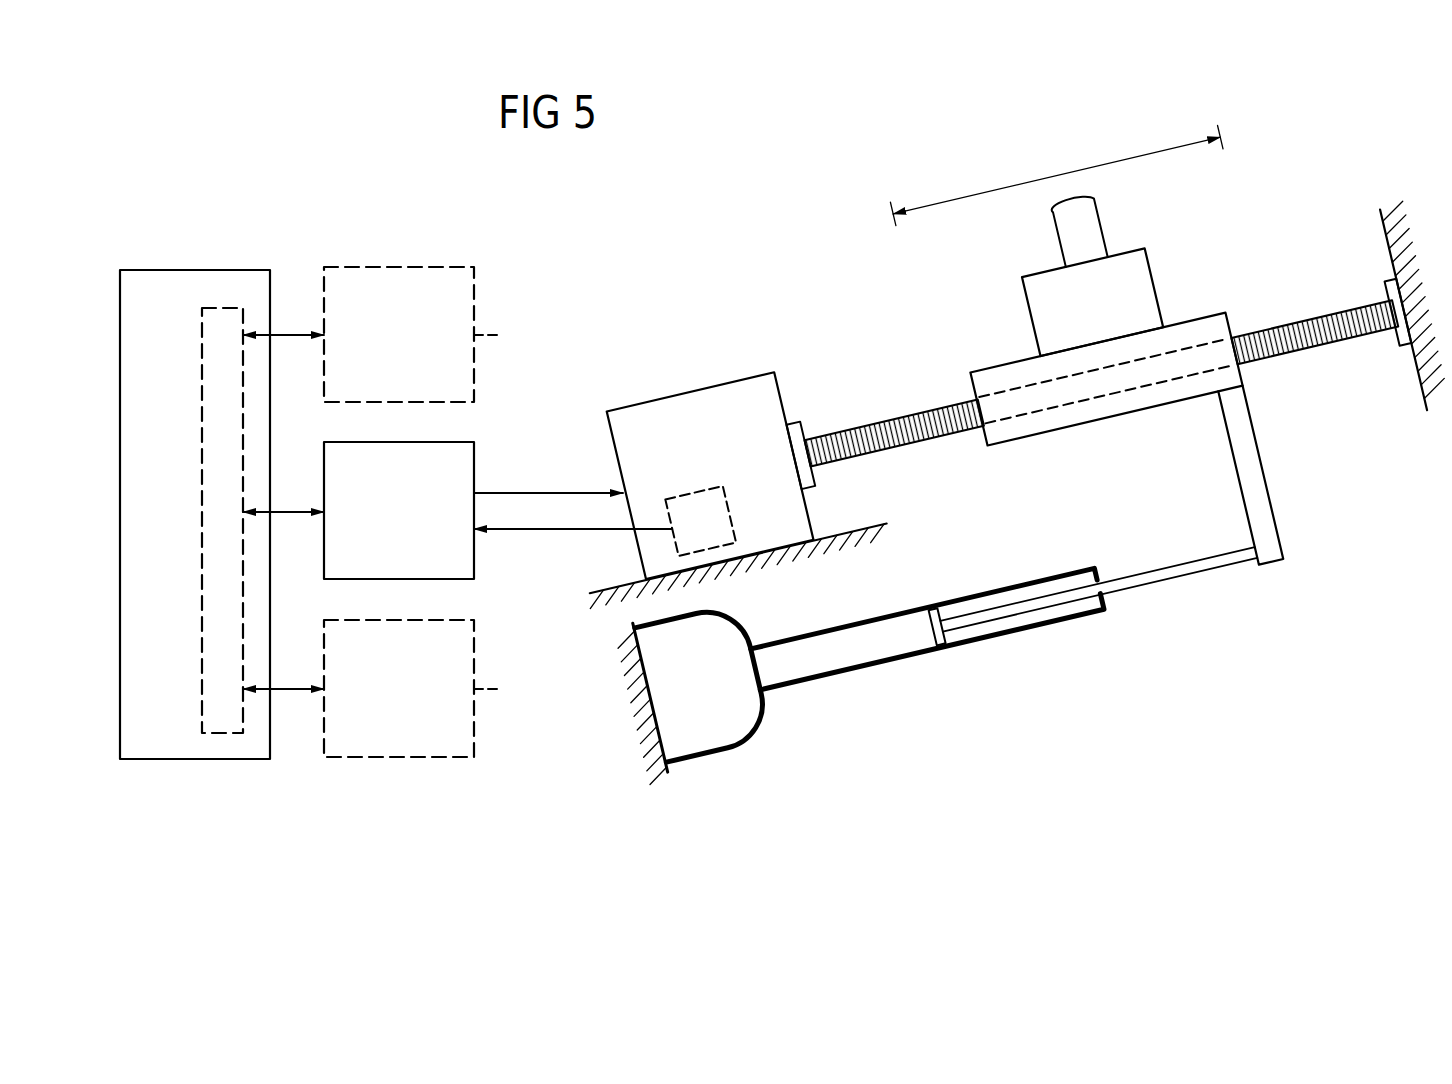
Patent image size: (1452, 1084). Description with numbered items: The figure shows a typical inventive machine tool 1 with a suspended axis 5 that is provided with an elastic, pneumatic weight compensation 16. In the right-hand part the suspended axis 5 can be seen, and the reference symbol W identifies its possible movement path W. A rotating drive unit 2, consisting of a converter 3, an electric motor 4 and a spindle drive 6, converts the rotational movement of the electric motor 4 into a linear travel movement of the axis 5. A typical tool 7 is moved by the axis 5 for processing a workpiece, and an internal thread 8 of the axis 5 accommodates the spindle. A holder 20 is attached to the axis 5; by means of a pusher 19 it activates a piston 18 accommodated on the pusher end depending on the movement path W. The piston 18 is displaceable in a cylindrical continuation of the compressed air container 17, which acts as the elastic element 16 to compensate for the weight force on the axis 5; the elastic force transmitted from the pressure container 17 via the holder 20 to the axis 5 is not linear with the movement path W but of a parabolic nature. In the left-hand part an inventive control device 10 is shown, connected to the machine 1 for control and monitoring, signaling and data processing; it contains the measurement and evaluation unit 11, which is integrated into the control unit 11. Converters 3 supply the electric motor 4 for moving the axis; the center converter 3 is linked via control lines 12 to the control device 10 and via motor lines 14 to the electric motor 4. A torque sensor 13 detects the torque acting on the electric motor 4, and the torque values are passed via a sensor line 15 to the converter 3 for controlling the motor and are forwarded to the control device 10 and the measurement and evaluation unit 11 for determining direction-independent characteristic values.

The machine tool 1 is at (825, 275).
The rotating drive unit 2 is at (448, 442).
The converter 3 is at (475, 308).
The electric motor 4 is at (735, 372).
The suspended axis 5 is at (1190, 330).
The spindle drive 6 is at (1253, 327).
The tool 7 is at (1040, 295).
The internal thread 8 is at (1073, 400).
The control device 10 is at (160, 270).
The measurement and evaluation unit 11 is at (225, 308).
The control lines 12 is at (283, 335).
The torque sensor 13 is at (698, 487).
The motor lines 14 is at (522, 493).
The sensor line 15 is at (553, 533).
The elastic element 16 is at (1062, 640).
The compressed air container 17 is at (800, 667).
The piston 18 is at (940, 648).
The piston rod 19 is at (1157, 575).
The holder 20 is at (1257, 478).
The movement path W is at (1068, 168).